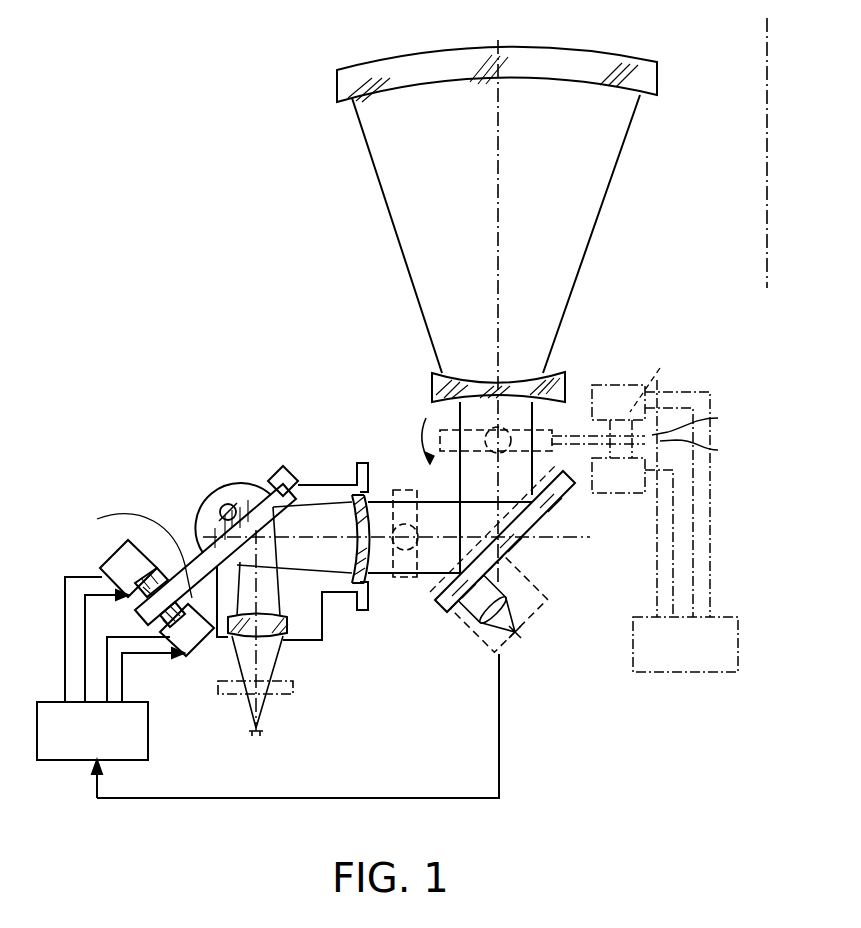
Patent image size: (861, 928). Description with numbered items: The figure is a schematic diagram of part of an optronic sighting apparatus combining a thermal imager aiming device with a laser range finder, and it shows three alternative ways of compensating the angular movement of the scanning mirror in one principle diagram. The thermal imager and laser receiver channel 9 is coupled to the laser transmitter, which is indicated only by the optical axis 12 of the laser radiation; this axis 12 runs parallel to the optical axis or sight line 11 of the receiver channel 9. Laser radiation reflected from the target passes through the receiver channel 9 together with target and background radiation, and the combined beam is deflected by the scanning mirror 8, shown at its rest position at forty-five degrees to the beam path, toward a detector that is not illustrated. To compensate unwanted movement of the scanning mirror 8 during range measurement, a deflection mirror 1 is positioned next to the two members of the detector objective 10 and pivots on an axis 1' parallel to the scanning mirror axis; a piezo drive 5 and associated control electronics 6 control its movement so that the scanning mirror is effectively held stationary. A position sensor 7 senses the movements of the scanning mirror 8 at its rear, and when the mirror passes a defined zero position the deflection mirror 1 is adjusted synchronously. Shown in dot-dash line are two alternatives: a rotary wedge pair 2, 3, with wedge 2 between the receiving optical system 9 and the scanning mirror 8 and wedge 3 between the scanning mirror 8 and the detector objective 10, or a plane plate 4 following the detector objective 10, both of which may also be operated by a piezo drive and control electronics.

The deflection mirror 1 is at (216, 547).
The axis 1' is at (201, 489).
The rotary wedge 2 is at (440, 440).
The rotary wedge 3 is at (401, 580).
The plane plate 4 is at (288, 689).
The piezo drive 5 is at (600, 392).
The control electronics 6 is at (640, 658).
The position sensor 7 is at (527, 623).
The scanning mirror 8 is at (502, 549).
The receiver channel 9 is at (345, 87).
The detector objective 10 is at (287, 614).
The optical axis 11 is at (498, 40).
The optical axis 12 is at (767, 48).